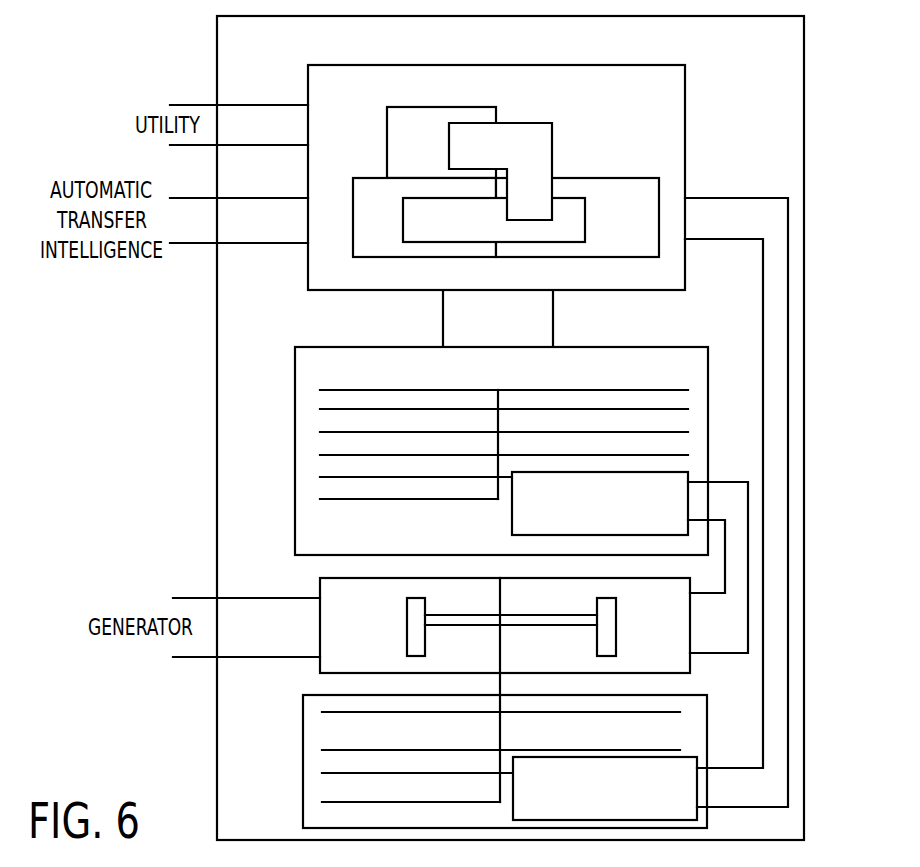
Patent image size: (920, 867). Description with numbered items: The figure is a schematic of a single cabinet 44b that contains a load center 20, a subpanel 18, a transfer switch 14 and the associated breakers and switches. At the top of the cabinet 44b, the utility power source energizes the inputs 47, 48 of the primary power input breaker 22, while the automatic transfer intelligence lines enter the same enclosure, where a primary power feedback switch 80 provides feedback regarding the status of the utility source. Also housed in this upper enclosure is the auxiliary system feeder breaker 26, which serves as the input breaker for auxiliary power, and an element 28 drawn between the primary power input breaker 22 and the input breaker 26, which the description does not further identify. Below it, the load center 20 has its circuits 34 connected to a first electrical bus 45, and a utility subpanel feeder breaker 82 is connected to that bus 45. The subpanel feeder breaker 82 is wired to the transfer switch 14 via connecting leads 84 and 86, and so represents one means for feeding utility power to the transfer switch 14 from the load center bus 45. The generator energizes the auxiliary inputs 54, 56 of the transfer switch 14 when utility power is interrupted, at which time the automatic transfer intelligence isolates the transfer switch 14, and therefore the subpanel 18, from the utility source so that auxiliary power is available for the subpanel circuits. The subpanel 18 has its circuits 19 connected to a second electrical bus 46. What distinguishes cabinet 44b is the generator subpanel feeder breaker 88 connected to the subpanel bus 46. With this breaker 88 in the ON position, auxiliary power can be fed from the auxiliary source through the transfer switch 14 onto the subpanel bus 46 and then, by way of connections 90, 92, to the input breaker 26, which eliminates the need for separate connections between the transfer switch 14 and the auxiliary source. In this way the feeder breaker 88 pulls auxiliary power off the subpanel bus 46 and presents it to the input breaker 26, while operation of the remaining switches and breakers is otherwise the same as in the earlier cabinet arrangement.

The cabinet 44b is at (804, 60).
The input of primary power input breaker 47 is at (238, 108).
The input of primary power input breaker 48 is at (238, 148).
The primary power input breaker 22 is at (440, 104).
The primary power feedback switch 80 is at (369, 178).
The auxiliary system feeder breaker 26 is at (604, 178).
The moving contact 28 is at (553, 143).
The load center 20 is at (683, 354).
The circuits 34 is at (585, 408).
The first electrical bus 45 is at (498, 400).
The subpanel feeder breaker 82 is at (528, 534).
The connecting lead 84 is at (698, 600).
The connecting lead 86 is at (700, 655).
The auxiliary input of transfer switch 54 is at (283, 597).
The auxiliary input of transfer switch 56 is at (284, 657).
The transfer switch 14 is at (328, 663).
The subpanel 18 is at (308, 796).
The circuits 19 is at (525, 712).
The second electrical bus 46 is at (500, 723).
The generator subpanel feeder breaker 88 is at (613, 757).
The connection 92 is at (765, 732).
The connection 90 is at (790, 780).